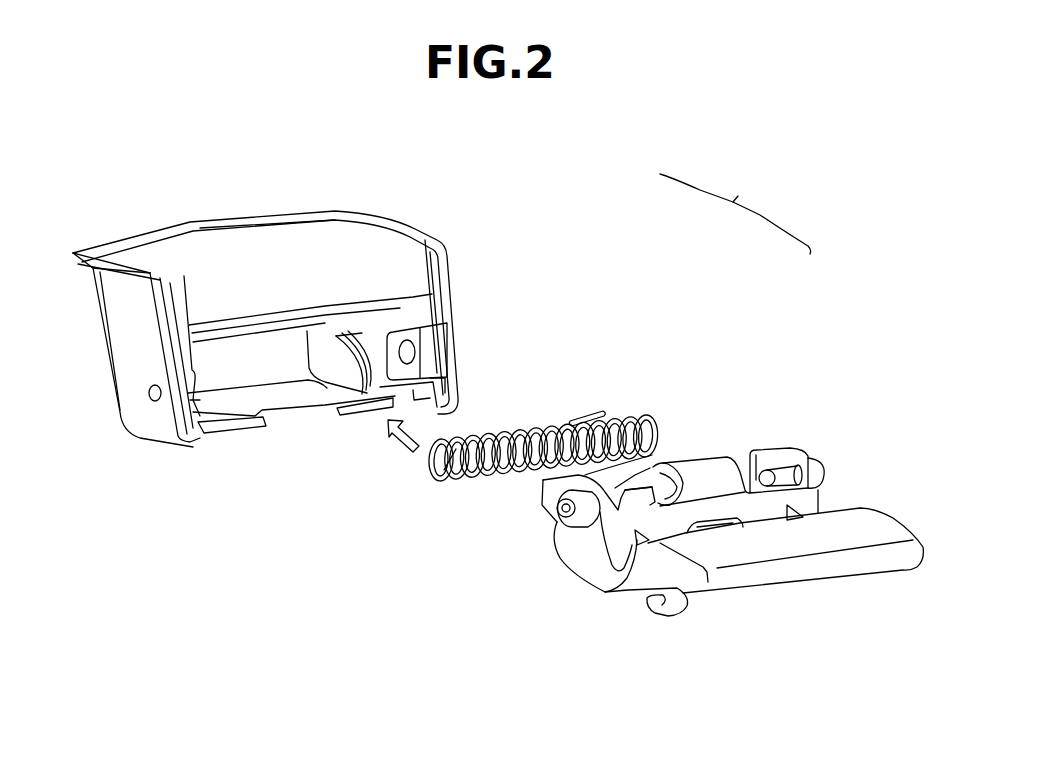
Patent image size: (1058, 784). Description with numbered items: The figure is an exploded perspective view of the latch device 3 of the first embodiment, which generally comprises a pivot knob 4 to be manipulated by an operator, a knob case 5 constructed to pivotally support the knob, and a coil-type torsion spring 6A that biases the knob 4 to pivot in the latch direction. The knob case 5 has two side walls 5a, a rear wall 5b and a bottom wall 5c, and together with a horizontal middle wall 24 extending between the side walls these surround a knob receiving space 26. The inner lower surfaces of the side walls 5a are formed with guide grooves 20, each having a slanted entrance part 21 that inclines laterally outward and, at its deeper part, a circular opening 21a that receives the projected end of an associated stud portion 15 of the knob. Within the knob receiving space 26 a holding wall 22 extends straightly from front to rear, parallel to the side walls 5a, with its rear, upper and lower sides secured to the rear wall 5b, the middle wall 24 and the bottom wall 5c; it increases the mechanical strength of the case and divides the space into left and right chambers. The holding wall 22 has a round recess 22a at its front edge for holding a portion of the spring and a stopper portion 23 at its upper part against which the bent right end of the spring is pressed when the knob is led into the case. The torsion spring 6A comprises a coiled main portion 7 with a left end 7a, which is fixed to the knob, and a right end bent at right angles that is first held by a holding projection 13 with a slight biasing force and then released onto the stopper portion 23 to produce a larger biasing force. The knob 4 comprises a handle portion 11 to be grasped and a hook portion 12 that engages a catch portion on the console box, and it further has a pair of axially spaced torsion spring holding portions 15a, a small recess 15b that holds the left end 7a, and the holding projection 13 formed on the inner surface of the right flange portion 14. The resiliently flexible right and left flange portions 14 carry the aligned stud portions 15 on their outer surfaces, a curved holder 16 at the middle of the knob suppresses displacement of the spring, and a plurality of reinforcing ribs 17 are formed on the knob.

The latch device 3 is at (735, 213).
The pivot knob 4 is at (752, 360).
The knob case 5 is at (529, 223).
The side wall 5a is at (122, 343).
The rear wall 5b is at (272, 240).
The bottom wall 5c is at (232, 408).
The torsion spring 6A is at (655, 322).
The coiled main portion 7 is at (503, 480).
The left end 7a is at (455, 480).
The handle portion 11 is at (883, 527).
The hook portion 12 is at (707, 607).
The holding projection 13 is at (768, 460).
The flange portion 14 is at (537, 498).
The stud portion 15 is at (550, 530).
The torsion spring holding portion 15a is at (640, 478).
The small recess 15b is at (673, 510).
The curved holder 16 is at (707, 470).
The reinforcing rib 17 is at (640, 585).
The guide groove 20 is at (426, 367).
The slanted entrance part 21 is at (433, 345).
The circular opening 21a is at (420, 345).
The holding wall 22 is at (327, 370).
The round recess 22a is at (405, 340).
The stopper portion 23 is at (393, 308).
The horizontal middle wall 24 is at (323, 320).
The knob receiving space 26 is at (258, 358).